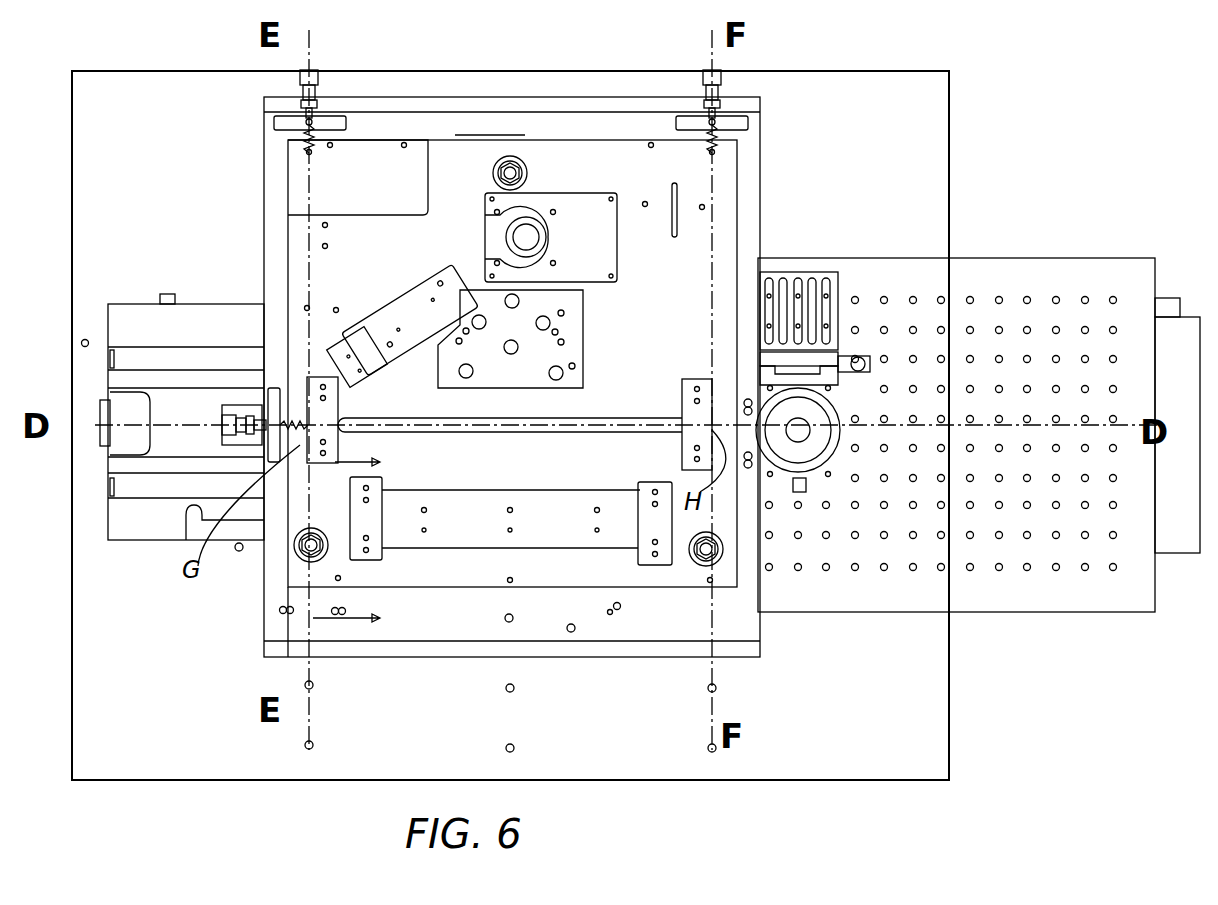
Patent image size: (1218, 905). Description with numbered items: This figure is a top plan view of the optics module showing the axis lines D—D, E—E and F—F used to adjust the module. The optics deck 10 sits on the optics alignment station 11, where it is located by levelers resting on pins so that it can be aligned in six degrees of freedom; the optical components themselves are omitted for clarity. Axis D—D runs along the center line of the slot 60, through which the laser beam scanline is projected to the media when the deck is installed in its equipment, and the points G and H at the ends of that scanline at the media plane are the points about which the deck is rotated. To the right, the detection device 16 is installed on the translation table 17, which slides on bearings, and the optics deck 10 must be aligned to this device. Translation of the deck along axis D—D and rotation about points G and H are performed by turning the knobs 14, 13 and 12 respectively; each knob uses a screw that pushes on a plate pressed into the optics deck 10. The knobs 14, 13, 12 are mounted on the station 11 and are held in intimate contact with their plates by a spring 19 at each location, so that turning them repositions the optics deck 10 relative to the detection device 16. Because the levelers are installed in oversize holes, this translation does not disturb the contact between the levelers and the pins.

The optics deck 10 is at (560, 140).
The optics alignment station 11 is at (448, 97).
The knob 12 is at (710, 68).
The knob 13 is at (312, 66).
The knob 14 is at (222, 425).
The detection device 16 is at (842, 410).
The translation table 17 is at (1090, 258).
The spring 19 is at (306, 143).
The slot 60 is at (620, 418).